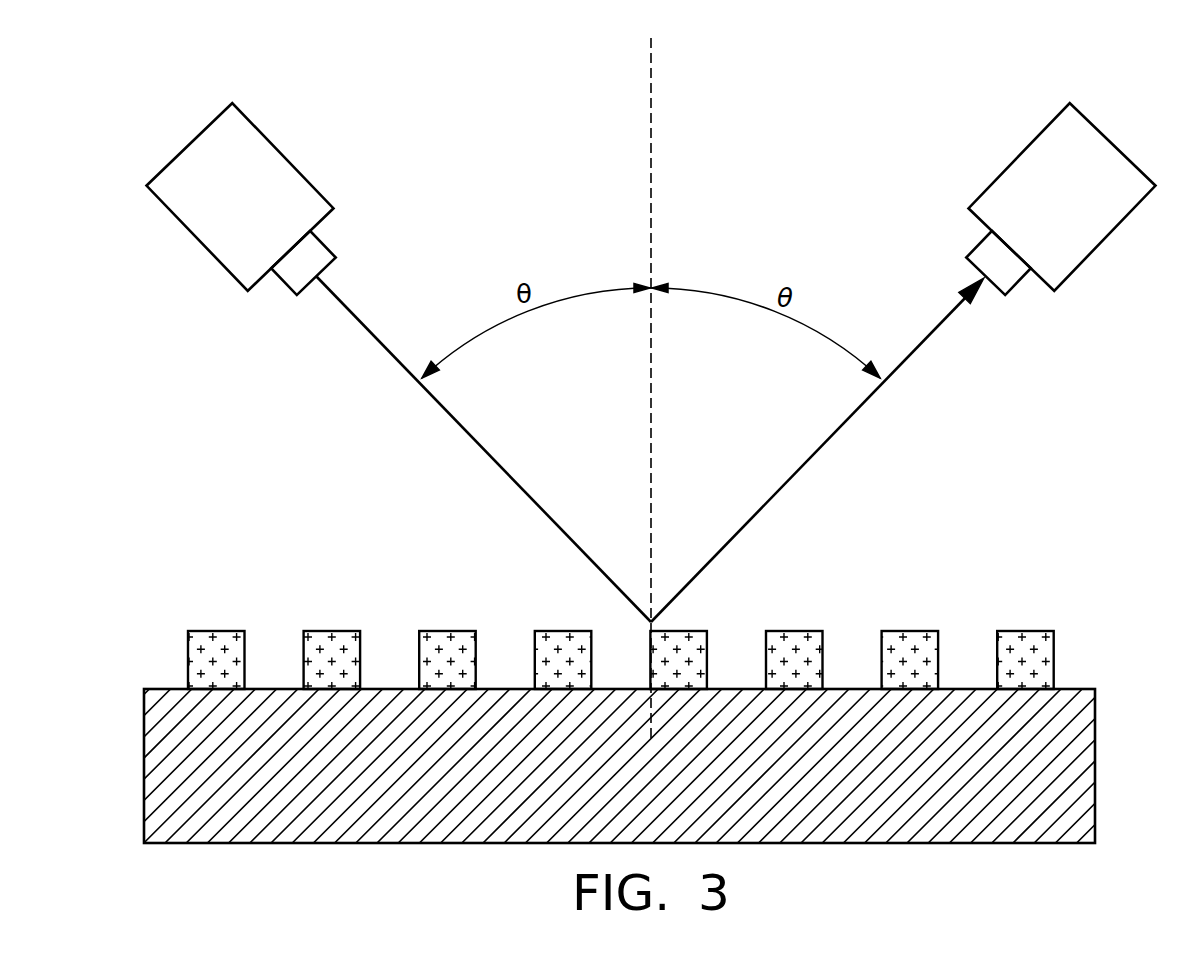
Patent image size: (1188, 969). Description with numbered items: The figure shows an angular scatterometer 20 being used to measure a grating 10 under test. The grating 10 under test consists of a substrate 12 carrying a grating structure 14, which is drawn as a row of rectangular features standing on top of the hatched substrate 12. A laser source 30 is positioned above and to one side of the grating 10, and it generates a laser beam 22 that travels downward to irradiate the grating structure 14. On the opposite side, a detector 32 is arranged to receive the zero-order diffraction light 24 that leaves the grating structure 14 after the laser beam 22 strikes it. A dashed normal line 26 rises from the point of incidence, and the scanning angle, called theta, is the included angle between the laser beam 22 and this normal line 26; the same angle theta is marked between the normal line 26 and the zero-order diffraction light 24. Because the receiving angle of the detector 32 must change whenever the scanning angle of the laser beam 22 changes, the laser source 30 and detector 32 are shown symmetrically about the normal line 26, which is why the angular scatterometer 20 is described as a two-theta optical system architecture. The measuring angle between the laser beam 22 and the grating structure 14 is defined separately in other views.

The grating under test 10 is at (594, 690).
The substrate 12 is at (1080, 790).
The grating structure 14 is at (1053, 658).
The angular scatterometer 20 is at (842, 100).
The laser beam 22 is at (483, 450).
The zero-order diffraction light 24 is at (819, 450).
The normal line 26 is at (651, 157).
The laser source 30 is at (284, 152).
The detector 32 is at (1018, 152).